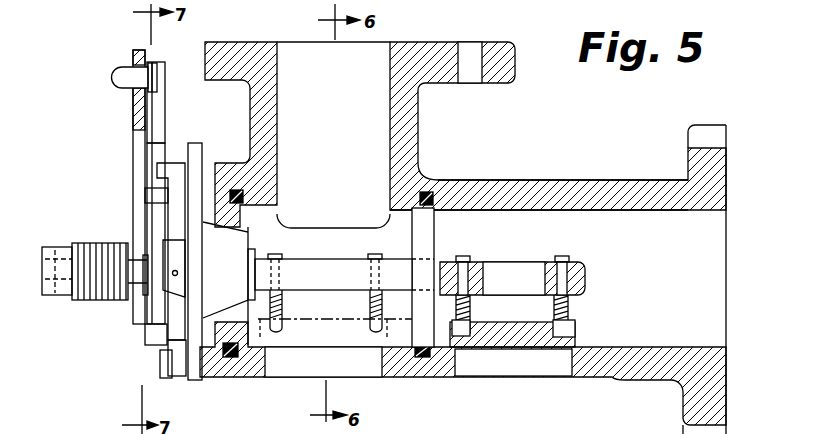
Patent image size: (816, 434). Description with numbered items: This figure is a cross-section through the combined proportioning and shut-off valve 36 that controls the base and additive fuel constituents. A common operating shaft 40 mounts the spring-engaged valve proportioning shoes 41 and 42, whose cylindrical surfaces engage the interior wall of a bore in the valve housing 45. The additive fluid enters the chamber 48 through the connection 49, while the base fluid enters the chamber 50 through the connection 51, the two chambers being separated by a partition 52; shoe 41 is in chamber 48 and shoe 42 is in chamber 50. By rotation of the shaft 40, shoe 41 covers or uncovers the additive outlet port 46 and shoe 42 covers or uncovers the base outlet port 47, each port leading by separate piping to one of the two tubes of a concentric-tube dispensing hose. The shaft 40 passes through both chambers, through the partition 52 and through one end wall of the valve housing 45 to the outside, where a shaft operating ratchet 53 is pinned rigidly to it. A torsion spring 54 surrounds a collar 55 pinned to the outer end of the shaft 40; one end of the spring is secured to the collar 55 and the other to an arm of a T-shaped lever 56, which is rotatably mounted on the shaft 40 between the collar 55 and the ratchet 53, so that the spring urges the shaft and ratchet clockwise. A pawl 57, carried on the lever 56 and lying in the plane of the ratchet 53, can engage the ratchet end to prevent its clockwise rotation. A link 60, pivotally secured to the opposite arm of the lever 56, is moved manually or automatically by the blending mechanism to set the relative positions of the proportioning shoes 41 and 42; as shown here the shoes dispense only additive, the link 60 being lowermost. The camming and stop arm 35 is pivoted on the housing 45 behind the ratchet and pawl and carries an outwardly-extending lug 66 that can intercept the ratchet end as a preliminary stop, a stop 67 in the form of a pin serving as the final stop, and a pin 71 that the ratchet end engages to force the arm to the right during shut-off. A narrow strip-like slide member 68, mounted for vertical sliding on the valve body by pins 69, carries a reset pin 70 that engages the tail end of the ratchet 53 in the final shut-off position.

The camming and stop arm 35 is at (177, 208).
The combined proportioning and shut-off valve 36 is at (517, 118).
The shaft 40 is at (522, 275).
The valve proportioning shoe 41 is at (325, 332).
The valve proportioning shoe 42 is at (527, 334).
The valve housing 45 is at (598, 180).
The outlet port 46 is at (288, 365).
The outlet port 47 is at (525, 364).
The chamber 48 is at (333, 249).
The connection 49 is at (382, 43).
The chamber 50 is at (505, 224).
The connection 51 is at (723, 285).
The partition 52 is at (434, 233).
The shaft operating ratchet 53 is at (157, 148).
The torsion spring 54 is at (100, 300).
The collar 55 is at (50, 289).
The T-shaped lever 56 is at (137, 108).
The pawl 57 is at (155, 107).
The link 60 is at (122, 76).
The lug 66 is at (157, 165).
The stop 67 is at (152, 193).
The slide member 68 is at (173, 347).
The pins 69 is at (173, 365).
The reset pin 70 is at (155, 345).
The pin 71 is at (163, 267).